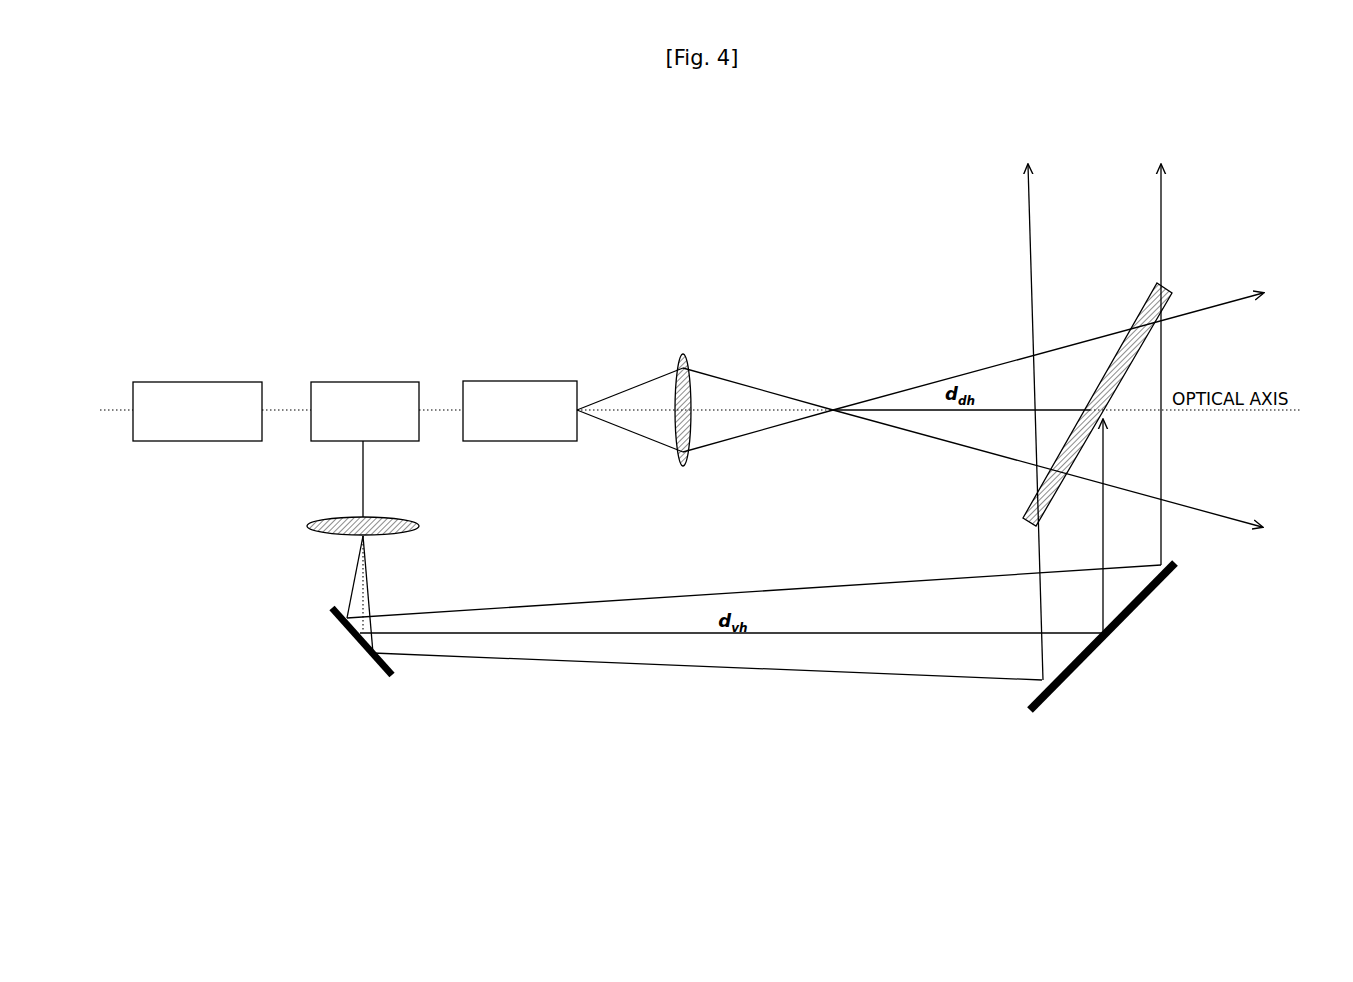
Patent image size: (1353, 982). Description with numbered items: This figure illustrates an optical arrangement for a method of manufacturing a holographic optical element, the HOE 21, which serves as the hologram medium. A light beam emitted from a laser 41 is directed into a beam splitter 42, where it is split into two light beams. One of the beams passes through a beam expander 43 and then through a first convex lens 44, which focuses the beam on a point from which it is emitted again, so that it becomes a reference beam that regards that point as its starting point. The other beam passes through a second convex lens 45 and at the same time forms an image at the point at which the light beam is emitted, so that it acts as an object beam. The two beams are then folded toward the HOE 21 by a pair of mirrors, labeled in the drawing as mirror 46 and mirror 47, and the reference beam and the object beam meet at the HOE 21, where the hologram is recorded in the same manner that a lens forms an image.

The HOE 21 is at (1165, 285).
The laser 41 is at (198, 380).
The beam splitter 42 is at (358, 380).
The beam expander 43 is at (514, 380).
The first convex lens 44 is at (690, 357).
The second convex lens 45 is at (313, 534).
The mirror #1 46 is at (368, 660).
The mirror #2 47 is at (1135, 610).